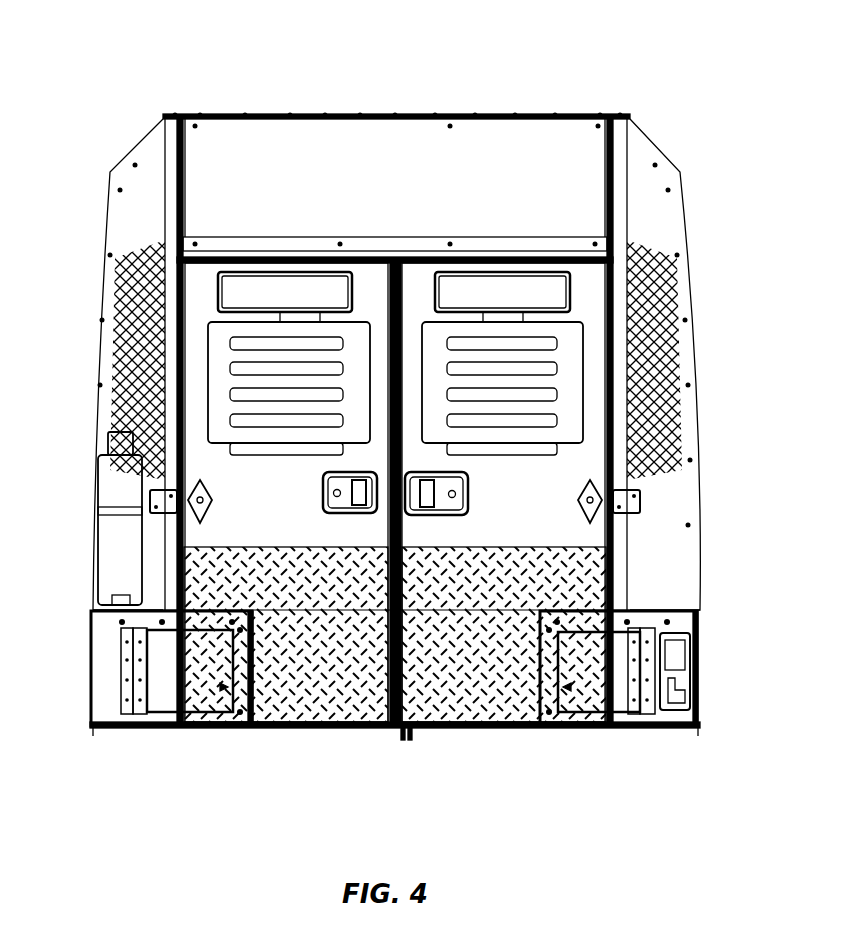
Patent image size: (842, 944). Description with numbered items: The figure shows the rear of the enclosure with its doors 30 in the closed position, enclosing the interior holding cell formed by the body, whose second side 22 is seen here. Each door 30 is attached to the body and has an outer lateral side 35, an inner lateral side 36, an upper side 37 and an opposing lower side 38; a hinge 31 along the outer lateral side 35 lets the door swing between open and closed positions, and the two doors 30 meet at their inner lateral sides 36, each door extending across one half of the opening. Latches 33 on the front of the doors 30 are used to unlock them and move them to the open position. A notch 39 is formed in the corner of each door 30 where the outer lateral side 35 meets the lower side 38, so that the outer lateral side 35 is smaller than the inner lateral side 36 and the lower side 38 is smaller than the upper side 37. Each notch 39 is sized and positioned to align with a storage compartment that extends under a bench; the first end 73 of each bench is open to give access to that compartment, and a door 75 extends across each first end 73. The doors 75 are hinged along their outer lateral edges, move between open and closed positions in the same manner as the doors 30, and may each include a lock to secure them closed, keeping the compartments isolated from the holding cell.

The second side 22 is at (510, 170).
The door 30 is at (313, 658).
The hinge 31 is at (173, 337).
The latch 33 is at (432, 490).
The outer lateral side 35 is at (175, 290).
The inner lateral side 36 is at (385, 290).
The upper side 37 is at (246, 245).
The lower side 38 is at (340, 722).
The notch 39 is at (613, 595).
The first end 73 is at (115, 680).
The door 75 is at (190, 683).